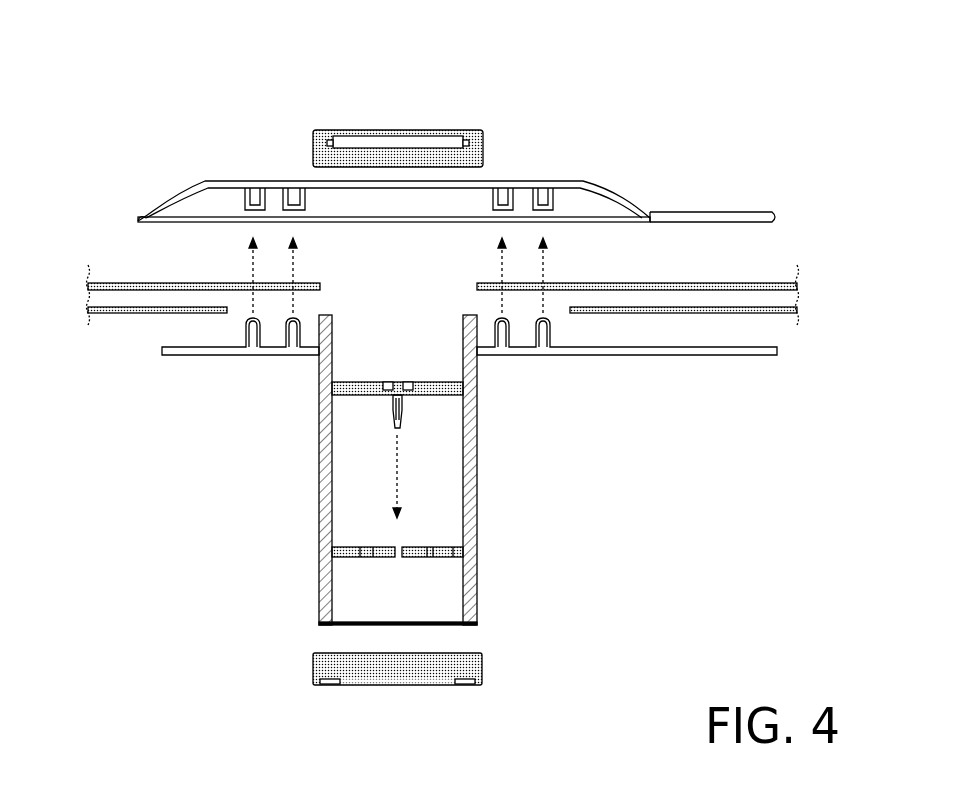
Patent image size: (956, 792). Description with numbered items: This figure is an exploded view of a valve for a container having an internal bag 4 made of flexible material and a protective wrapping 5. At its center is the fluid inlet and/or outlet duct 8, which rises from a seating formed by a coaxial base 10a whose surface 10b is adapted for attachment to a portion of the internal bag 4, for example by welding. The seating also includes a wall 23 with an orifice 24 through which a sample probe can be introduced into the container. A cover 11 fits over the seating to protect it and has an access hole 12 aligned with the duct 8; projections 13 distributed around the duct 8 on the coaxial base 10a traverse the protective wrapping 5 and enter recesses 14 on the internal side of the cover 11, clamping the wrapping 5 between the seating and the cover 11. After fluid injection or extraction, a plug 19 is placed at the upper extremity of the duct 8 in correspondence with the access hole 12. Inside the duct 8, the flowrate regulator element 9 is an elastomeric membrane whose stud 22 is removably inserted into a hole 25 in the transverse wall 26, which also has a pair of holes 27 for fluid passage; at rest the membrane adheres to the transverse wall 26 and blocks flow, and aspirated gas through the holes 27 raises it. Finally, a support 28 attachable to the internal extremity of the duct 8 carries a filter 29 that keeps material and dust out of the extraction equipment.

The internal bag 4 is at (120, 313).
The protective wrapping 5 is at (117, 283).
The fluid inlet and/or outlet duct 8 is at (322, 512).
The flowrate regulator element 9 is at (352, 390).
The coaxial base 10a is at (215, 355).
The surface 10b is at (178, 352).
The cover 11 is at (617, 196).
The access hole 12 is at (315, 178).
The projections 13 is at (294, 336).
The recesses 14 is at (232, 184).
The plug 19 is at (400, 130).
The stud 22 is at (405, 410).
The wall 23 is at (752, 356).
The orifice 24 is at (706, 356).
The hole 25 is at (402, 556).
The transverse wall 26 is at (340, 555).
The holes 27 is at (442, 552).
The support 28 is at (315, 683).
The filter 29 is at (437, 683).